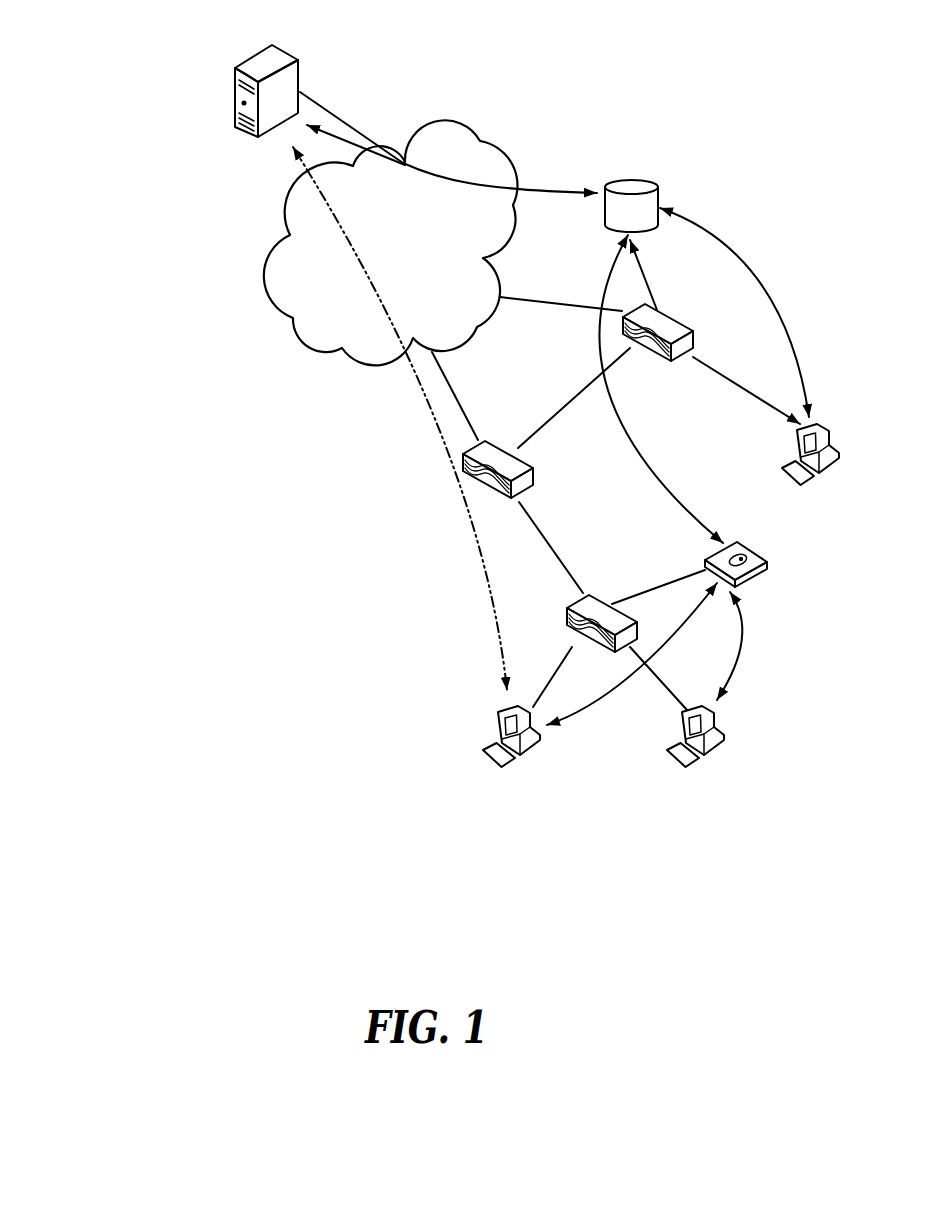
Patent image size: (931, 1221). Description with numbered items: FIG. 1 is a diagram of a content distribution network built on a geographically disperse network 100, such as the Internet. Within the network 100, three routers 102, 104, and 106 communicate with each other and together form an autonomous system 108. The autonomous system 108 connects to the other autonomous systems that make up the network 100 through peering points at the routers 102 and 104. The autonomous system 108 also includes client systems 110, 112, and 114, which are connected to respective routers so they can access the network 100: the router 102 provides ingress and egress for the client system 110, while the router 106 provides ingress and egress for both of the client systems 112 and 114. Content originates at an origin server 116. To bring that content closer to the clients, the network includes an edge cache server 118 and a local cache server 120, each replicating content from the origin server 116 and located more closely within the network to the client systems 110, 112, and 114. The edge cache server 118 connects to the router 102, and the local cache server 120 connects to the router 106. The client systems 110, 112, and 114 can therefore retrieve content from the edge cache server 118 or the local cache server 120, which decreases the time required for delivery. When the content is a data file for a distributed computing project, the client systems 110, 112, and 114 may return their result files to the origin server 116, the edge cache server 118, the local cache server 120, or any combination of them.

The geographically disperse network 100 is at (208, 413).
The router 102 is at (668, 312).
The router 104 is at (534, 482).
The router 106 is at (577, 602).
The autonomous system 108 is at (703, 150).
The client system 110 is at (797, 429).
The client system 112 is at (503, 712).
The client system 114 is at (683, 710).
The origin server 116 is at (256, 60).
The edge cache server 118 is at (606, 226).
The local cache server 120 is at (763, 556).